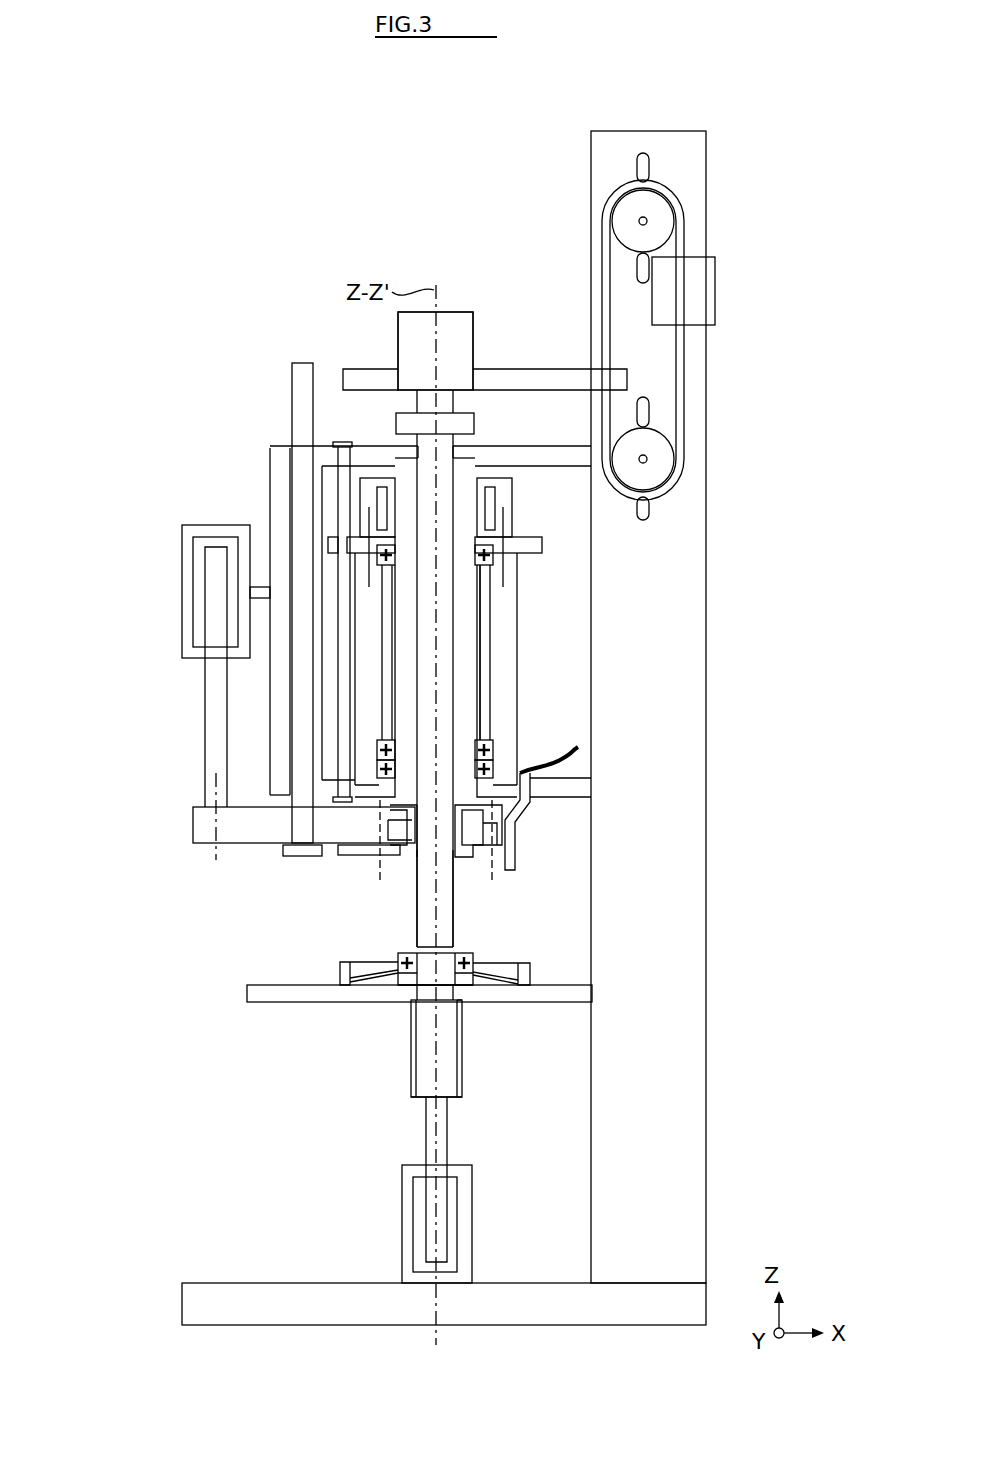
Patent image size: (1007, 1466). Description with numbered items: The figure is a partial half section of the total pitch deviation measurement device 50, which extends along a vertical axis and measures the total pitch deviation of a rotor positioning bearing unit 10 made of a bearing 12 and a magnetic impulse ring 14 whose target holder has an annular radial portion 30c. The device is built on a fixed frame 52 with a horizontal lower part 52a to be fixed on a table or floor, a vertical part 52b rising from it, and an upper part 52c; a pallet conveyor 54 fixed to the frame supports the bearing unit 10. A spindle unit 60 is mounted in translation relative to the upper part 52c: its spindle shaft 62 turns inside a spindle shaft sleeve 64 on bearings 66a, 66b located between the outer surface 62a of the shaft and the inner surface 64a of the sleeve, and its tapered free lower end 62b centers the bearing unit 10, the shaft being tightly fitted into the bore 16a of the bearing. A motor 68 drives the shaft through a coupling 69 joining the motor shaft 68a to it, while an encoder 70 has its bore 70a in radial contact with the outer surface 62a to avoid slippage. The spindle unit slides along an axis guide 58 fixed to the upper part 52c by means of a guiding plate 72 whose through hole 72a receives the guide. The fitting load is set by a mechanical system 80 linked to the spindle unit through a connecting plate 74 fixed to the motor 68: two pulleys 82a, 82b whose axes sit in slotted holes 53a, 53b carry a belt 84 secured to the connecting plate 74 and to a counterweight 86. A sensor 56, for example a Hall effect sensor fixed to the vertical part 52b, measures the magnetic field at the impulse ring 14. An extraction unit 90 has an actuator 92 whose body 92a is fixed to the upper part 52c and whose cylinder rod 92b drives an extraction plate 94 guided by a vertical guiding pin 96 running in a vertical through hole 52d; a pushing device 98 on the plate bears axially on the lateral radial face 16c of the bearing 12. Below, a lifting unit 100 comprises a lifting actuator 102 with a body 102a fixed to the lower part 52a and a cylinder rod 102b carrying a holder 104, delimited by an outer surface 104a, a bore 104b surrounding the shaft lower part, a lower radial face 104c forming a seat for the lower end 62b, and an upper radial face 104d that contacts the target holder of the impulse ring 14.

The rotor positioning bearing unit 10 is at (325, 954).
The bearing 12 is at (470, 900).
The impulse ring 14 is at (530, 955).
The bore 16a is at (405, 987).
The lateral radial face 16c is at (405, 955).
The annular radial portion 30c is at (462, 1000).
The total pitch deviation measurement device 50 is at (768, 103).
The fixed frame 52 is at (782, 980).
The horizontal lower part 52a is at (330, 1322).
The vertical part 52b is at (700, 1161).
The upper part 52c is at (282, 483).
The vertical through hole 52d is at (300, 463).
The slotted hole 53a is at (652, 510).
The slotted hole 53b is at (652, 163).
The pallet conveyor 54 is at (247, 994).
The sensor 56 is at (513, 839).
The axis guide 58 is at (345, 450).
The spindle unit 60 is at (430, 262).
The spindle shaft 62 is at (450, 672).
The outer surface 62a is at (485, 700).
The free lower end 62b is at (457, 943).
The spindle shaft sleeve 64 is at (508, 612).
The inner surface 64a is at (485, 638).
The bearing 66a is at (495, 745).
The bearing 66b is at (495, 560).
The motor 68 is at (410, 345).
The motor shaft 68a is at (440, 405).
The coupling 69 is at (405, 425).
The encoder 70 is at (505, 495).
The bore 70a is at (466, 508).
The guiding plate 72 is at (345, 553).
The through hole 72a is at (333, 540).
The connecting plate 74 is at (562, 374).
The mechanical system 80 is at (752, 246).
The pulley 82a is at (660, 462).
The pulley 82b is at (660, 219).
The belt 84 is at (685, 376).
The counterweight 86 is at (700, 297).
The extraction unit 90 is at (118, 704).
The actuator 92 is at (132, 571).
The body 92a is at (190, 602).
The cylinder rod 92b is at (215, 726).
The extraction plate 94 is at (200, 829).
The vertical guiding pin 96 is at (300, 380).
The pushing device 98 is at (398, 852).
The lifting unit 100 is at (260, 1183).
The lifting actuator 102 is at (490, 1222).
The body 102a is at (405, 1277).
The cylinder rod 102b is at (430, 1140).
The holder 104 is at (410, 1079).
The outer surface 104a is at (462, 1080).
The bore 104b is at (425, 1055).
The lower radial face 104c is at (452, 1100).
The upper radial face 104d is at (458, 1010).